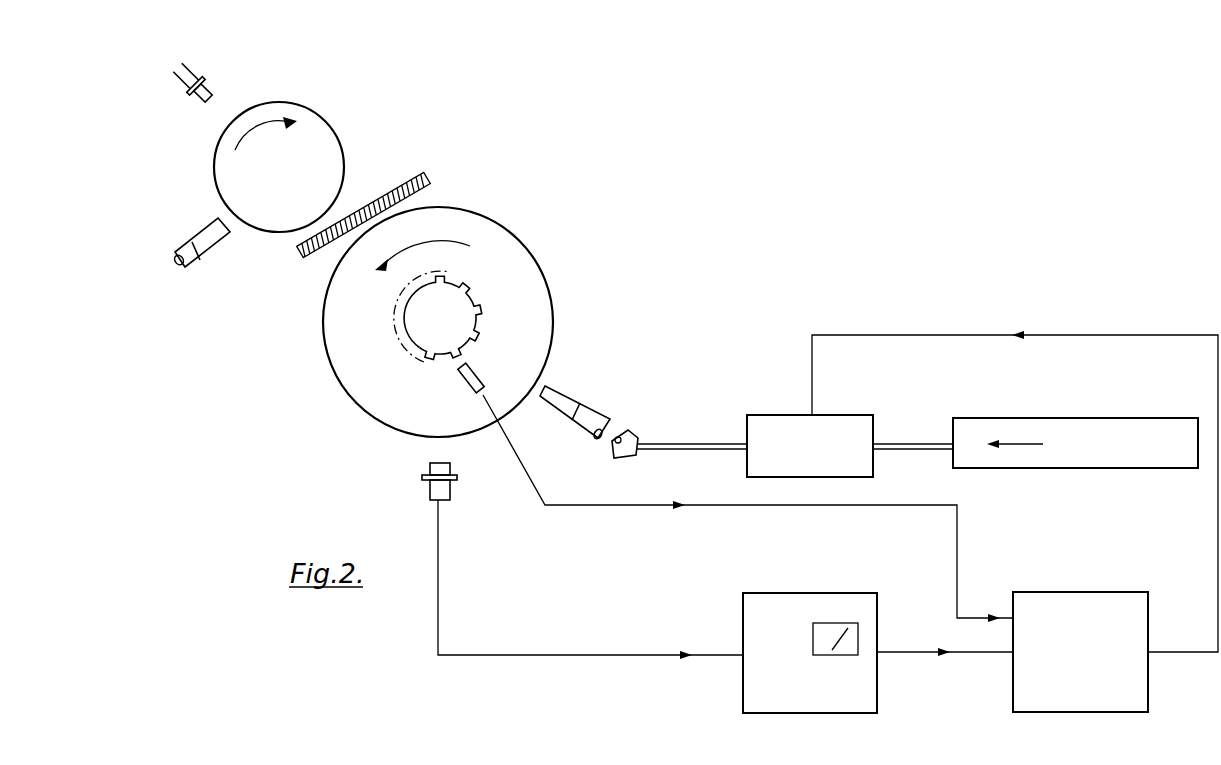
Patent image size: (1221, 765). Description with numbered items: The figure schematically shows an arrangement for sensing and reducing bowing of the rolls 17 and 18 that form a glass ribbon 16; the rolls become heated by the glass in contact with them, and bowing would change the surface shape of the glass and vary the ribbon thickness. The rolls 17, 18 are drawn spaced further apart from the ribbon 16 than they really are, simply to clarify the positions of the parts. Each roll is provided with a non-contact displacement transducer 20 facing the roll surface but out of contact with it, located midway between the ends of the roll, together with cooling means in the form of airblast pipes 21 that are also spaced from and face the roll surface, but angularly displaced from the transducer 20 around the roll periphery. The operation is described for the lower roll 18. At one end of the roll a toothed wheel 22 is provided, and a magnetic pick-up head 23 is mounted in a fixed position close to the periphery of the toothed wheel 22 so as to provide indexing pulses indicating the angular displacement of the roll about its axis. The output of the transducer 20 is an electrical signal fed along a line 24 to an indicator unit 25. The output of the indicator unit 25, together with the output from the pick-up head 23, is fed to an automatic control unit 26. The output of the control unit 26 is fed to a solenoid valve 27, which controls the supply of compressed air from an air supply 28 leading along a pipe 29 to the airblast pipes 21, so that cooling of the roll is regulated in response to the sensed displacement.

The ribbon 16 is at (299, 253).
The roll 17 is at (297, 104).
The lower roll 18 is at (502, 217).
The non-contact displacement transducer 20 is at (214, 90).
The airblast pipes 21 is at (214, 242).
The toothed wheel 22 is at (474, 303).
The magnetic pick-up head 23 is at (478, 384).
The line 24 is at (553, 655).
The indicator unit 25 is at (818, 592).
The automatic control unit 26 is at (1104, 593).
The solenoid valve 27 is at (857, 415).
The air supply 28 is at (1023, 419).
The pipe 29 is at (678, 444).